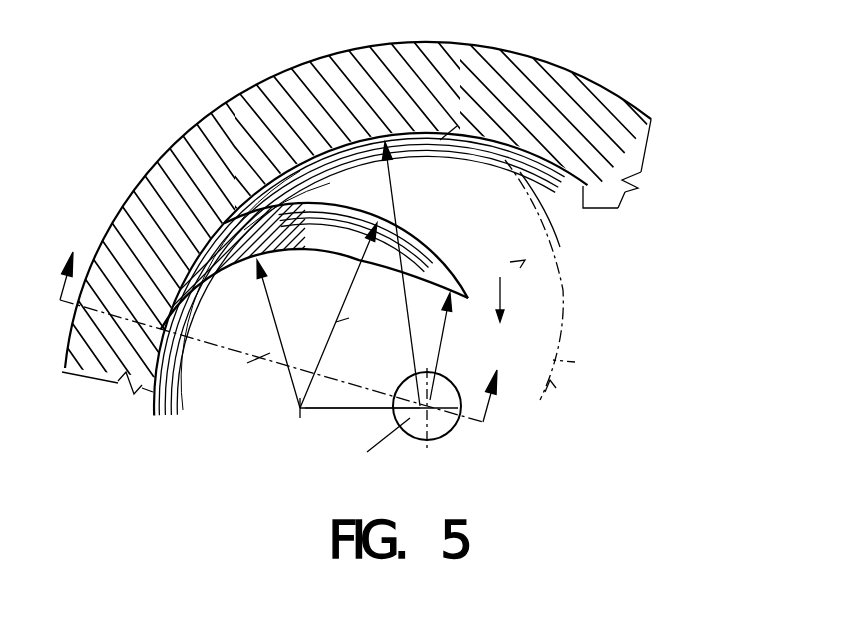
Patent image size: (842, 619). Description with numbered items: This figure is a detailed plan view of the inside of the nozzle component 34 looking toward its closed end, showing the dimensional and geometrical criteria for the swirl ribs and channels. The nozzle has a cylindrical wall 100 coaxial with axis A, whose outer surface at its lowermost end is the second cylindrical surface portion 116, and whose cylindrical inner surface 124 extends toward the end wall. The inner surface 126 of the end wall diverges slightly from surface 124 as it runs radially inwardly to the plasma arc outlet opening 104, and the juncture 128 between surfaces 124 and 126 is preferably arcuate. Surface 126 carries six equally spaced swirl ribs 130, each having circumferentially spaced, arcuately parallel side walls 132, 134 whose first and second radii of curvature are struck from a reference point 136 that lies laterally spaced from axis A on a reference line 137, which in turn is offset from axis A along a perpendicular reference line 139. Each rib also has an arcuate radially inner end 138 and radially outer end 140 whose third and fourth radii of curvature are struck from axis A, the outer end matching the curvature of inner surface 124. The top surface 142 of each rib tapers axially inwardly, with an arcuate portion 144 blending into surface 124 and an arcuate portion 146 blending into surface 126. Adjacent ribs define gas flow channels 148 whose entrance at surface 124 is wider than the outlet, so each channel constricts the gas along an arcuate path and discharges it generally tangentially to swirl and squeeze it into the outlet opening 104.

The nozzle component 34 is at (126, 76).
The cylindrical wall 100 is at (592, 107).
The plasma arc outlet opening 104 is at (450, 426).
The second cylindrical surface portion 116 is at (127, 210).
The cylindrical inner surface 124 is at (608, 208).
The inner surface of end wall 126 is at (320, 180).
The juncture 128 is at (162, 388).
The swirl ribs 130 is at (257, 193).
The side wall 132 is at (290, 205).
The side wall 134 is at (295, 252).
The reference point 136 is at (300, 413).
The reference line 137 is at (333, 410).
The radially inner end 138 is at (412, 322).
The reference line 139 is at (422, 410).
The radially outer end 140 is at (200, 232).
The top surface 142 is at (339, 207).
The arcuate portion 144 is at (222, 228).
The arcuate portion 146 is at (447, 277).
The gas flow channels 148 is at (437, 200).